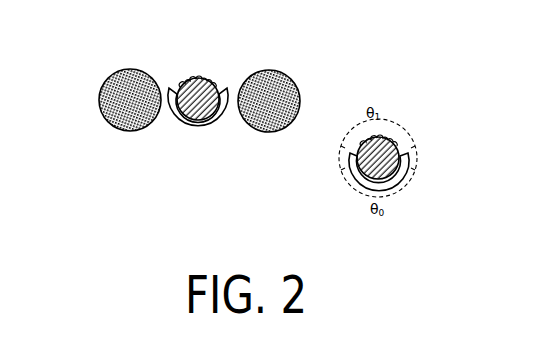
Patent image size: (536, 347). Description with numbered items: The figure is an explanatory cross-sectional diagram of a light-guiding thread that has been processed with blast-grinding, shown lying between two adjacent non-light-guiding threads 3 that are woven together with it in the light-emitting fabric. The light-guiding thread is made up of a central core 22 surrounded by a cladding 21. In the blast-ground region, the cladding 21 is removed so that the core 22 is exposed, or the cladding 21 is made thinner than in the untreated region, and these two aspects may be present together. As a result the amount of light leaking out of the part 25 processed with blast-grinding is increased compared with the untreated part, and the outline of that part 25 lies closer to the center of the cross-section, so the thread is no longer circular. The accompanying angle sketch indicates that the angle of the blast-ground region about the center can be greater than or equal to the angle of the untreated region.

The non-light-guiding thread 3 is at (126, 84).
The cladding 21 is at (188, 129).
The core 22 is at (213, 126).
The part processed with blast-grinding 25 is at (192, 77).